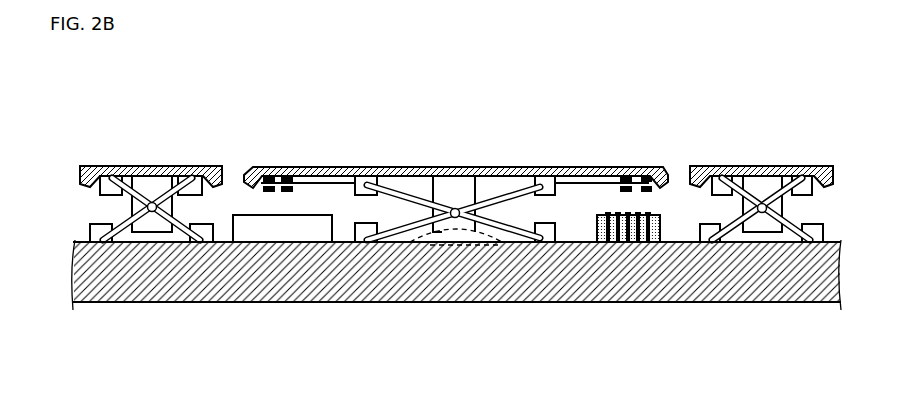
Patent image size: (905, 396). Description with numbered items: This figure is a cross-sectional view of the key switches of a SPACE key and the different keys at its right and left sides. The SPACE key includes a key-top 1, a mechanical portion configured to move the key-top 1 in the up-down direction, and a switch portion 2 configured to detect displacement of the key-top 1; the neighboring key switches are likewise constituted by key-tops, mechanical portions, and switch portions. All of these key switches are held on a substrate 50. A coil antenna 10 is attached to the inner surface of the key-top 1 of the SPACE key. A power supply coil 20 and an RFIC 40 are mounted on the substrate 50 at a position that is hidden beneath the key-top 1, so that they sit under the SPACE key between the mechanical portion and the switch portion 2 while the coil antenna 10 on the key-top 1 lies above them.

The key-top 1 is at (460, 166).
The switch portion 2 is at (453, 244).
The coil antenna 10 is at (590, 192).
The power supply coil 20 is at (660, 228).
The RFIC 40 is at (282, 235).
The substrate 50 is at (802, 288).